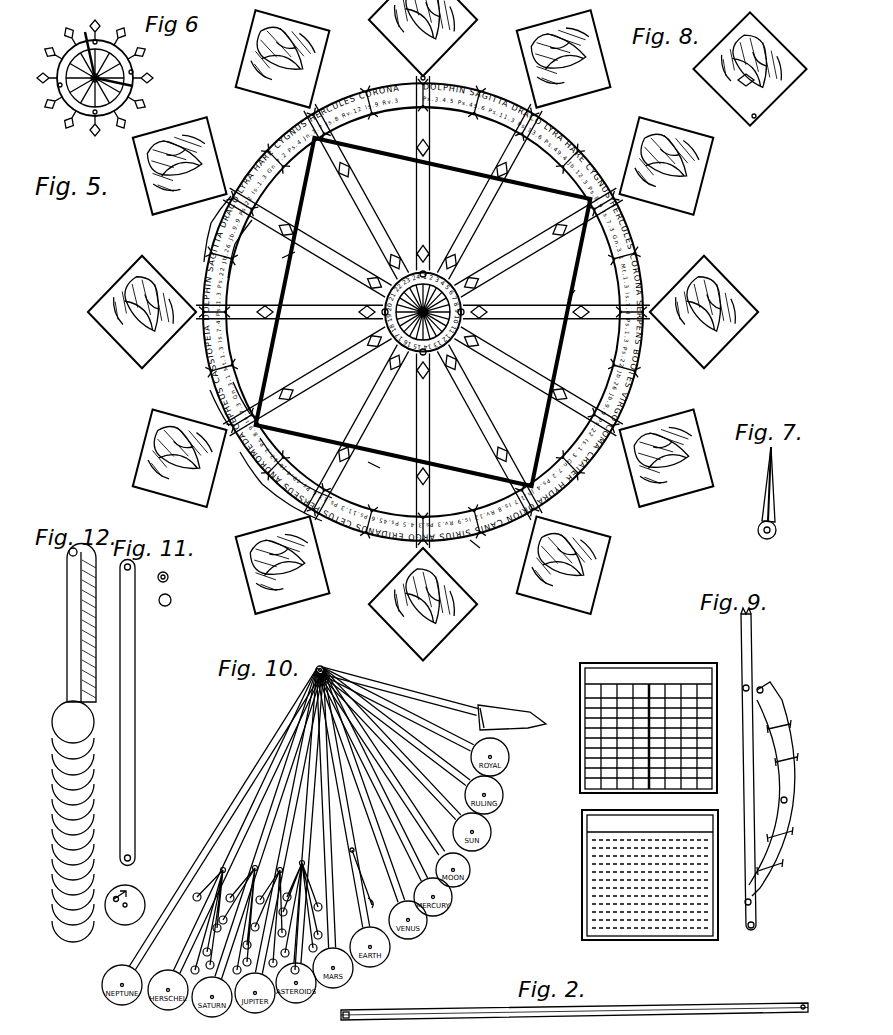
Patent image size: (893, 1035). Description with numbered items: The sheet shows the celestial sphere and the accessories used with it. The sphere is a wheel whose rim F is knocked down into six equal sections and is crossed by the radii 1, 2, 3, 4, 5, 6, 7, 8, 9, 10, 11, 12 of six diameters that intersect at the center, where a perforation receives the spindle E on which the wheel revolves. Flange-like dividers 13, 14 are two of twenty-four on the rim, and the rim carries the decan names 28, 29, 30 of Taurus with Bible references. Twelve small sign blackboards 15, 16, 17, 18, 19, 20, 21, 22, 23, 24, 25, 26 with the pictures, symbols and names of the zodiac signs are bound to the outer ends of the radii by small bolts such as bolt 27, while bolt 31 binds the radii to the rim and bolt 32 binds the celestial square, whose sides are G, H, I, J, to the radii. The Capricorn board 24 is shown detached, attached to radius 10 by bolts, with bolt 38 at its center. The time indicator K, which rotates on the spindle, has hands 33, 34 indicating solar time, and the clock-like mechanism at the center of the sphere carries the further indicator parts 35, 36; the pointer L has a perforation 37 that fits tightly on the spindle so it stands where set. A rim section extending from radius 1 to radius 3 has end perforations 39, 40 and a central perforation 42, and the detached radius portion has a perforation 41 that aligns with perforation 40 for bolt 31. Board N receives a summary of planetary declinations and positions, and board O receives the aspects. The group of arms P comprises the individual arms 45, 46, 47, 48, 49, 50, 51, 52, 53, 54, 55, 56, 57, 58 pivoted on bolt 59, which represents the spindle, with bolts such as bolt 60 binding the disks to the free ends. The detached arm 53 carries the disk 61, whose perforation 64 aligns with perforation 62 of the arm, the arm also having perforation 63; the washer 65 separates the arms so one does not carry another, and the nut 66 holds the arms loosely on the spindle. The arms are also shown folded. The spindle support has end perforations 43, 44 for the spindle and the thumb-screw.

In FIG. 5, the radius 1 is at (262, 320).
In FIG. 5, the radius 2 is at (320, 380).
In FIG. 5, the radius 3 is at (372, 415).
In FIG. 5, the radius 4 is at (430, 425).
In FIG. 5, the radius 5 is at (475, 400).
In FIG. 5, the radius 6 is at (515, 365).
In FIG. 5, the radius 7 is at (545, 320).
In FIG. 5, the radius 8 is at (530, 255).
In FIG. 5, the radius 9 is at (480, 212).
In FIG. 5, the radius 10 is at (428, 210).
In FIG. 5, the radius 11 is at (356, 205).
In FIG. 5, the radius 12 is at (322, 266).
In FIG. 5, the flange-like divider 13 is at (208, 240).
In FIG. 5, the flange-like divider 14 is at (205, 268).
In FIG. 5, the sign blackboard 15 is at (90, 325).
In FIG. 5, the sign blackboard 16 is at (148, 455).
In FIG. 5, the sign blackboard 17 is at (250, 580).
In FIG. 5, the sign blackboard 18 is at (378, 608).
In FIG. 5, the sign blackboard 19 is at (535, 600).
In FIG. 5, the sign blackboard 20 is at (663, 497).
In FIG. 5, the sign blackboard 21 is at (690, 346).
In FIG. 5, the sign blackboard 22 is at (680, 215).
In FIG. 5, the sign blackboard 23 is at (600, 108).
In FIG. 5, the sign blackboard 24 is at (458, 55).
In FIG. 8, the sign blackboard 24 is at (776, 40).
In FIG. 5, the sign blackboard 25 is at (262, 110).
In FIG. 5, the sign blackboard 26 is at (140, 200).
In FIG. 5, the bolt 27 is at (416, 77).
In FIG. 8, the bolt 27 is at (756, 120).
In FIG. 5, the decan name 28 is at (250, 455).
In FIG. 5, the decan name 29 is at (268, 478).
In FIG. 5, the decan name 30 is at (285, 500).
In FIG. 5, the bolt 31 is at (222, 415).
In FIG. 5, the bolt 32 is at (262, 410).
In FIG. 5, the hand 33 is at (414, 268).
In FIG. 6, the hand 33 is at (88, 24).
In FIG. 5, the hand 34 is at (455, 306).
In FIG. 6, the hand 34 is at (133, 70).
In FIG. 5, the hub pin 35 is at (416, 356).
In FIG. 6, the hub pin 35 is at (90, 112).
In FIG. 5, the hub pin 36 is at (386, 328).
In FIG. 6, the hub pin 36 is at (62, 94).
In FIG. 7, the perforation 37 is at (776, 535).
In FIG. 8, the bolt 38 is at (736, 82).
In FIG. 9, the perforation 39 is at (767, 691).
In FIG. 9, the perforation 40 is at (755, 902).
In FIG. 9, the perforation 41 is at (758, 926).
In FIG. 9, the perforation 42 is at (788, 800).
In FIG. 2, the perforation 43 is at (801, 1005).
In FIG. 2, the perforation 44 is at (356, 1012).
In FIG. 10, the arm 45 is at (445, 703).
In FIG. 10, the arm 46 is at (440, 731).
In FIG. 10, the arm 47 is at (425, 750).
In FIG. 10, the arm 48 is at (415, 770).
In FIG. 10, the arm 49 is at (408, 803).
In FIG. 10, the arm 50 is at (392, 830).
In FIG. 10, the arm 51 is at (378, 856).
In FIG. 10, the arm 52 is at (355, 858).
In FIG. 11, the arm 53 is at (134, 718).
In FIG. 10, the arm 53 is at (334, 880).
In FIG. 10, the arm 54 is at (308, 855).
In FIG. 10, the arm 55 is at (292, 845).
In FIG. 10, the arm 56 is at (272, 850).
In FIG. 10, the arm 57 is at (252, 848).
In FIG. 10, the arm 58 is at (228, 850).
In FIG. 12, the bolt 59 is at (70, 556).
In FIG. 10, the bolt 59 is at (321, 664).
In FIG. 10, the bolt 60 is at (505, 705).
In FIG. 11, the disk 61 is at (144, 901).
In FIG. 11, the perforation 62 is at (124, 862).
In FIG. 11, the perforation 63 is at (124, 570).
In FIG. 11, the perforation 64 is at (128, 897).
In FIG. 11, the washer 65 is at (160, 582).
In FIG. 11, the nut 66 is at (164, 606).
In FIG. 5, the celestial square side I is at (446, 167).
In FIG. 9, the celestial square side I is at (748, 640).
In FIG. 5, the celestial square side J is at (283, 257).
In FIG. 5, the celestial square side H is at (577, 290).
In FIG. 5, the celestial square side G is at (372, 466).
In FIG. 5, the rim F is at (476, 545).
In FIG. 6, the indicator K is at (138, 90).
In FIG. 7, the pointer L is at (776, 483).
In FIG. 9, the blackboard N is at (788, 776).
In FIG. 10, the blackboard N is at (580, 752).
In FIG. 10, the blackboard O is at (584, 846).
In FIG. 12, the group of arms P is at (78, 629).
In FIG. 10, the group of arms P is at (330, 668).
In FIG. 2, the spindle E is at (640, 1008).